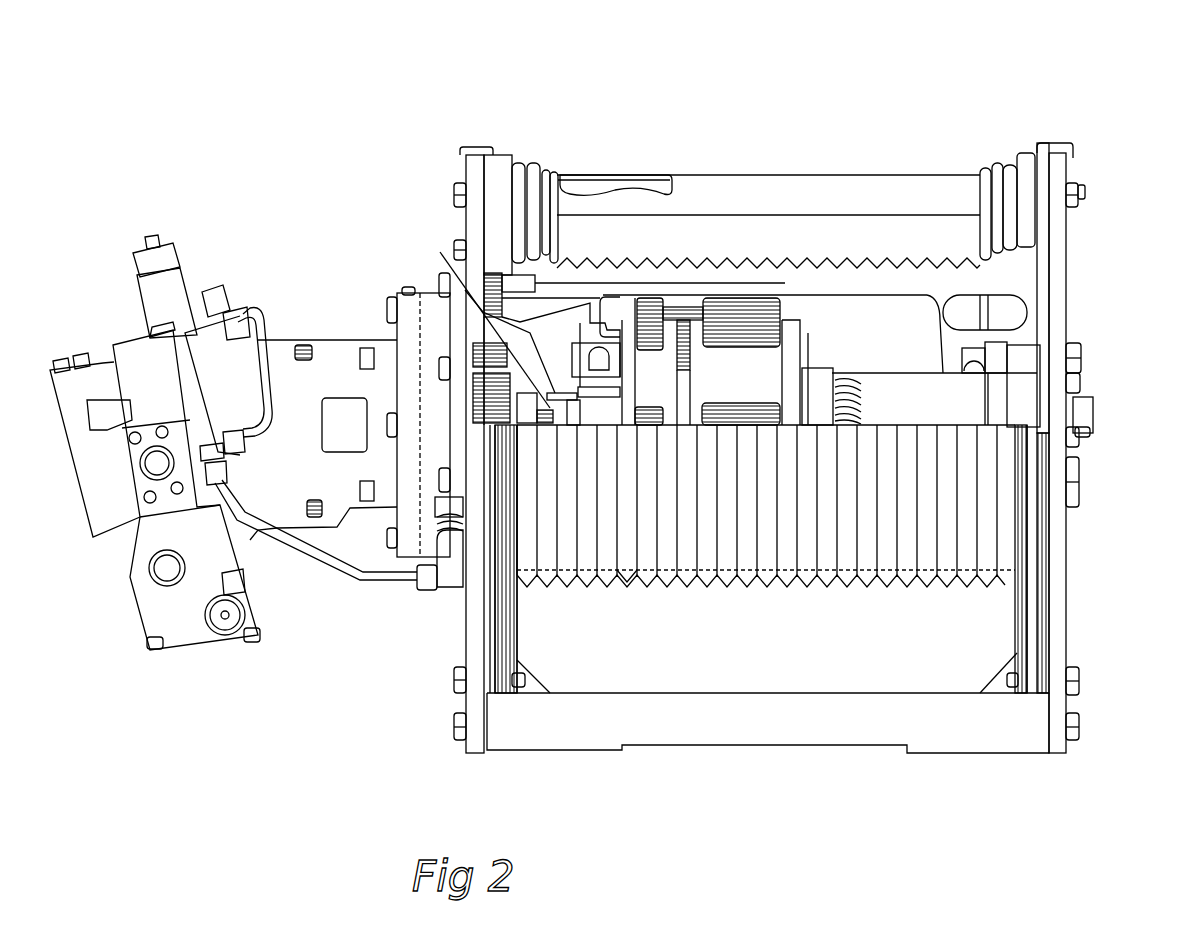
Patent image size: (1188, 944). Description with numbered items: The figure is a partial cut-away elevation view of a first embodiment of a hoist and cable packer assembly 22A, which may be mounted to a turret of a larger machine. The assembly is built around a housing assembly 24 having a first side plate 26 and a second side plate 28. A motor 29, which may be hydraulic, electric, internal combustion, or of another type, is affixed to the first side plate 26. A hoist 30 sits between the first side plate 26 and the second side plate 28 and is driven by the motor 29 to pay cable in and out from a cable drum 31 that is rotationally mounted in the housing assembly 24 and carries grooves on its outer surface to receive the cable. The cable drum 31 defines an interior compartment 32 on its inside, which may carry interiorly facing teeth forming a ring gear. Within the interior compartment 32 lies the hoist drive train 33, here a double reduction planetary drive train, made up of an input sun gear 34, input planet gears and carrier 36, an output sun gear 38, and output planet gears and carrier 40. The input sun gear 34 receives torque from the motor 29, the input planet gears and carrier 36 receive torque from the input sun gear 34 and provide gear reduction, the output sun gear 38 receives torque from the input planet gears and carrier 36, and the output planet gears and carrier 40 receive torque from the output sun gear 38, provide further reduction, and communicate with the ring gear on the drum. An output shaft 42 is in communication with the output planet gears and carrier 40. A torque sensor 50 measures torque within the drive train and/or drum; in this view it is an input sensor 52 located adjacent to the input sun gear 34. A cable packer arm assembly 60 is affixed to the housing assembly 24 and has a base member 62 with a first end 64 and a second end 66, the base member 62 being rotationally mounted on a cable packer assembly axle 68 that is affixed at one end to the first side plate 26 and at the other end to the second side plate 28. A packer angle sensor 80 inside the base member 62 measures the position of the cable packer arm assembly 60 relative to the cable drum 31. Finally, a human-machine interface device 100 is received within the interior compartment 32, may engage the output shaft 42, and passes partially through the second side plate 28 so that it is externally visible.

The hoist and cable packer assembly 22A is at (695, 379).
The housing assembly 24 is at (462, 618).
The first side plate 26 is at (462, 655).
The second side plate 28 is at (1073, 598).
The motor 29 is at (270, 262).
The hoist 30 is at (790, 635).
The cable drum 31 is at (627, 540).
The interior compartment 32 is at (838, 300).
The hoist drive train 33 is at (643, 243).
The input sun gear 34 is at (507, 294).
The input planet gears and carrier 36 is at (674, 266).
The output sun gear 38 is at (811, 266).
The output planet gears and carrier 40 is at (760, 240).
The output shaft 42 is at (919, 260).
The torque sensor 50 is at (568, 374).
The input sensor 52 is at (525, 260).
The cable packer arm assembly 60 is at (965, 130).
The base member 62 is at (712, 214).
The first end 64 is at (508, 130).
The second end 66 is at (1025, 128).
The cable packer assembly axle 68 is at (1086, 193).
The packer angle sensor 80 is at (615, 145).
The human-machine interface device 100 is at (1123, 392).